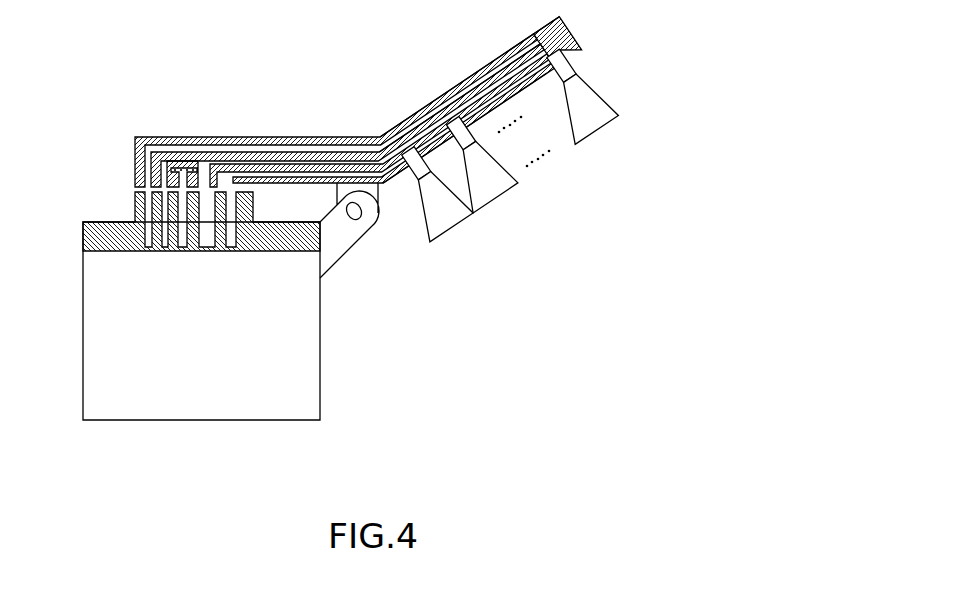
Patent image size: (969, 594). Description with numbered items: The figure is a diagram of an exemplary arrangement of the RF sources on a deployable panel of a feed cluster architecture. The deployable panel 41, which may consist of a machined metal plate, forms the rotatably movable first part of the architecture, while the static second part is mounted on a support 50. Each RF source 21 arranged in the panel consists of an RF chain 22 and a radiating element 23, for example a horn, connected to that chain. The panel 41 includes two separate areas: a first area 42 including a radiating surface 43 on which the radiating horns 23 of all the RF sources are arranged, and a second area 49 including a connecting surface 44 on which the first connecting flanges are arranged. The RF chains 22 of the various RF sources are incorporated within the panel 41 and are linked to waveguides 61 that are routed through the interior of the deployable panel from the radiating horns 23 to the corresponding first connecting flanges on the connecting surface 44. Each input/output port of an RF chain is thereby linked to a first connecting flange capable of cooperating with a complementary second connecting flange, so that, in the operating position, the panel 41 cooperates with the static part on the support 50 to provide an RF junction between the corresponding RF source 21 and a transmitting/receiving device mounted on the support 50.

The RF source 21 is at (425, 237).
The RF chain 22 is at (570, 65).
The radiating element 23 is at (587, 107).
The deployable panel 41 is at (567, 24).
The first area 42 is at (447, 90).
The radiating surface 43 is at (503, 105).
The connecting surface 44 is at (197, 187).
The second area 49 is at (232, 137).
The support 50 is at (270, 365).
The waveguide 61 is at (503, 63).